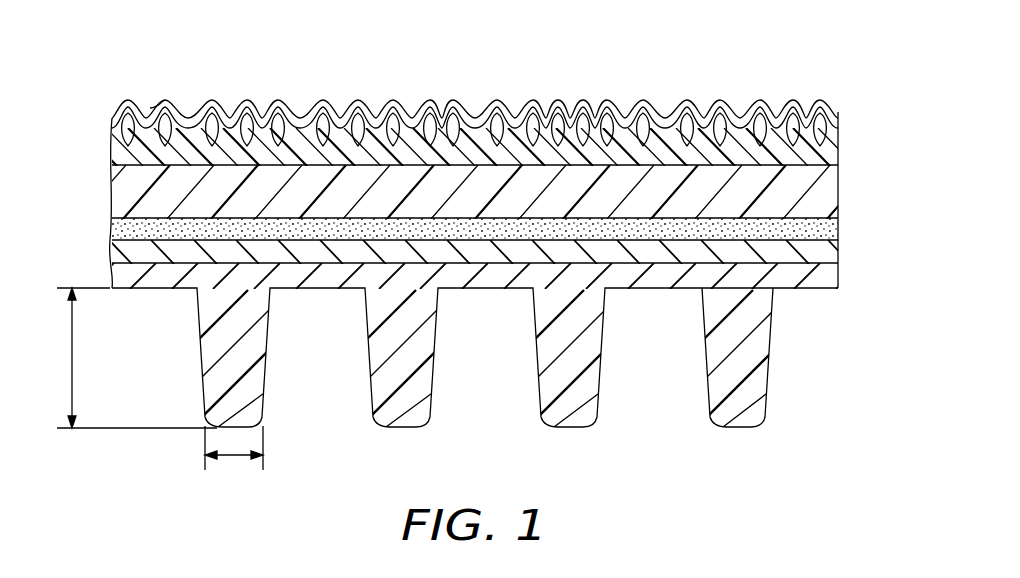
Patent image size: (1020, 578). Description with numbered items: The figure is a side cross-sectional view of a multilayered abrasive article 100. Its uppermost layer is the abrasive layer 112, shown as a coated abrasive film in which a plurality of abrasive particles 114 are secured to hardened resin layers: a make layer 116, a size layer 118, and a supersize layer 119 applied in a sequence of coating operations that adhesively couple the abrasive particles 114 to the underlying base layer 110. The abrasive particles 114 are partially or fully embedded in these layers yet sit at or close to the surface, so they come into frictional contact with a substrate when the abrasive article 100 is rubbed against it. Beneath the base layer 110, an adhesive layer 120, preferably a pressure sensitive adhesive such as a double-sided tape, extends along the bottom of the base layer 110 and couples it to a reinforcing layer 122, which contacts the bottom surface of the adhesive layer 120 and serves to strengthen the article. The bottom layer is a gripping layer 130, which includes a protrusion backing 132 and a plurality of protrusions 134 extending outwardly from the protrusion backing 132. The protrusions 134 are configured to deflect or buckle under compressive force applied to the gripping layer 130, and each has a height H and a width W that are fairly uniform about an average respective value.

The abrasive article 100 is at (683, 47).
The base layer 110 is at (820, 187).
The abrasive layer 112 is at (469, 105).
The abrasive particles 114 is at (460, 112).
The make layer 116 is at (115, 150).
The size layer 118 is at (112, 121).
The supersize layer 119 is at (160, 105).
The adhesive layer 120 is at (840, 228).
The reinforcing layer 122 is at (828, 257).
The gripping layer 130 is at (502, 373).
The protrusion backing 132 is at (815, 276).
The protrusions 134 is at (742, 410).
The height H is at (73, 355).
The width W is at (237, 458).